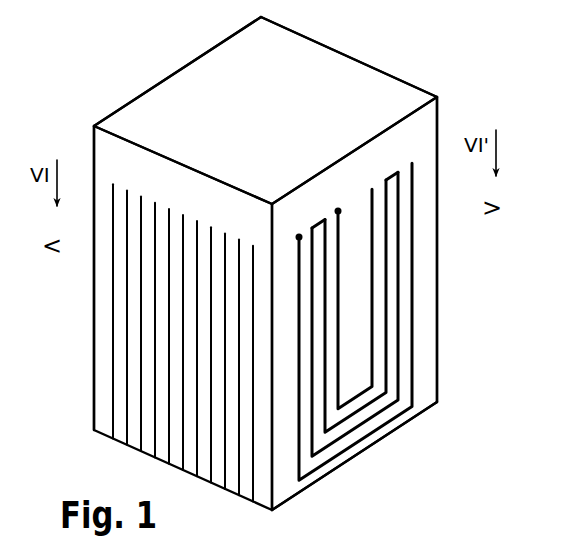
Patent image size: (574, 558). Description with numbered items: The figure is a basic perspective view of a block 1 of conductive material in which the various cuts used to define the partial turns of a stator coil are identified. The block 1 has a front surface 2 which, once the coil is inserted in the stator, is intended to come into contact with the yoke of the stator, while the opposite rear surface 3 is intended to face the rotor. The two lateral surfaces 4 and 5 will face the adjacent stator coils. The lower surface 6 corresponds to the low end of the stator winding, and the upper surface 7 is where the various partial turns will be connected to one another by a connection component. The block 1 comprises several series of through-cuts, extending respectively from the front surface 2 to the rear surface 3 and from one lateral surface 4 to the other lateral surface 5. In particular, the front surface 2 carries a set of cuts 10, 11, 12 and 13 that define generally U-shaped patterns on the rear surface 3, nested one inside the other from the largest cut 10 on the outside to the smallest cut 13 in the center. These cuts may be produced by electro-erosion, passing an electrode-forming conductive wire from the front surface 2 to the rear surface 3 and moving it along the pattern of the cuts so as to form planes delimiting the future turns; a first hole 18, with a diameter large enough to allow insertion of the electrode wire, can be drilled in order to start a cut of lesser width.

The block 1 is at (305, 68).
The surface 2 is at (418, 131).
The rear surface 3 is at (122, 100).
The lateral surface 4 is at (134, 326).
The lateral surface 5 is at (412, 70).
The lower surface 6 is at (320, 492).
The upper surface 7 is at (178, 118).
The cut 10 is at (298, 450).
The cut 11 is at (348, 437).
The cut 12 is at (375, 401).
The cut 13 is at (373, 368).
The first hole 18 is at (338, 208).